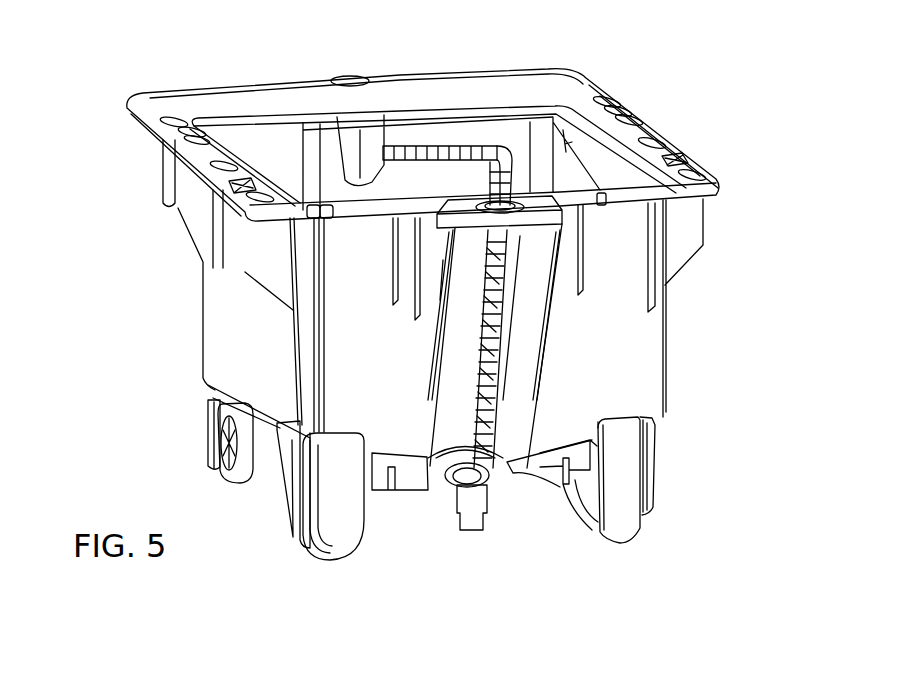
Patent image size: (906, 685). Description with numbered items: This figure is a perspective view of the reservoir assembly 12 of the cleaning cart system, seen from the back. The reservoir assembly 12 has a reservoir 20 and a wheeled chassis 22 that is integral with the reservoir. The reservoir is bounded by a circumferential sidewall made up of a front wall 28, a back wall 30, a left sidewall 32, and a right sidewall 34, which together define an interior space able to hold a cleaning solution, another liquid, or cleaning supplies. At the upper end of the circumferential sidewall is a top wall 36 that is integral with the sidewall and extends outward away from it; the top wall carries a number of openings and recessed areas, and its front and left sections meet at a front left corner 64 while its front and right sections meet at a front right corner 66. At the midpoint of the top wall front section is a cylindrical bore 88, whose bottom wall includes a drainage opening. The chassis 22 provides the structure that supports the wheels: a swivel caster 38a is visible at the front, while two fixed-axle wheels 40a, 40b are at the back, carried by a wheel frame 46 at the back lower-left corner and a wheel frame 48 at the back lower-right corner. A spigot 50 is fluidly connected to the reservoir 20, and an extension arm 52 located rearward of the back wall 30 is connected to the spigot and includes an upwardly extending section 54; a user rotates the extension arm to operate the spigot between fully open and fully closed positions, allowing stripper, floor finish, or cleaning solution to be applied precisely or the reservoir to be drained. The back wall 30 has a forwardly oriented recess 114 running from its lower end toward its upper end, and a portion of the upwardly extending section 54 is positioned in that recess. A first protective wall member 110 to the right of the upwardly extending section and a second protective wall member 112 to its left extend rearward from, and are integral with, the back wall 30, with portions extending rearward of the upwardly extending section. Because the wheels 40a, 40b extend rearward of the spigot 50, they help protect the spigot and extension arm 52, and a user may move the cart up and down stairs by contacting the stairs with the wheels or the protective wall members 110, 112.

The reservoir assembly 12 is at (106, 307).
The reservoir 20 is at (160, 246).
The wheeled chassis 22 is at (683, 481).
The front wall 28 is at (263, 142).
The back wall 30 is at (342, 293).
The left sidewall 32 is at (230, 293).
The right sidewall 34 is at (602, 140).
The top wall 36 is at (590, 86).
The swivel caster 38a is at (220, 467).
The fixed-axle wheel 40a is at (307, 547).
The fixed-axle wheel 40b is at (617, 546).
The wheel frame 46 is at (287, 477).
The wheel frame 48 is at (577, 500).
The spigot 50 is at (437, 514).
The extension arm 52 is at (502, 392).
The upwardly extending section 54 is at (495, 360).
The front left corner 64 is at (118, 86).
The front right corner 66 is at (594, 60).
The cylindrical bore 88 is at (349, 76).
The first protective wall member 110 is at (537, 323).
The second protective wall member 112 is at (437, 317).
The forwardly oriented recess 114 is at (507, 413).